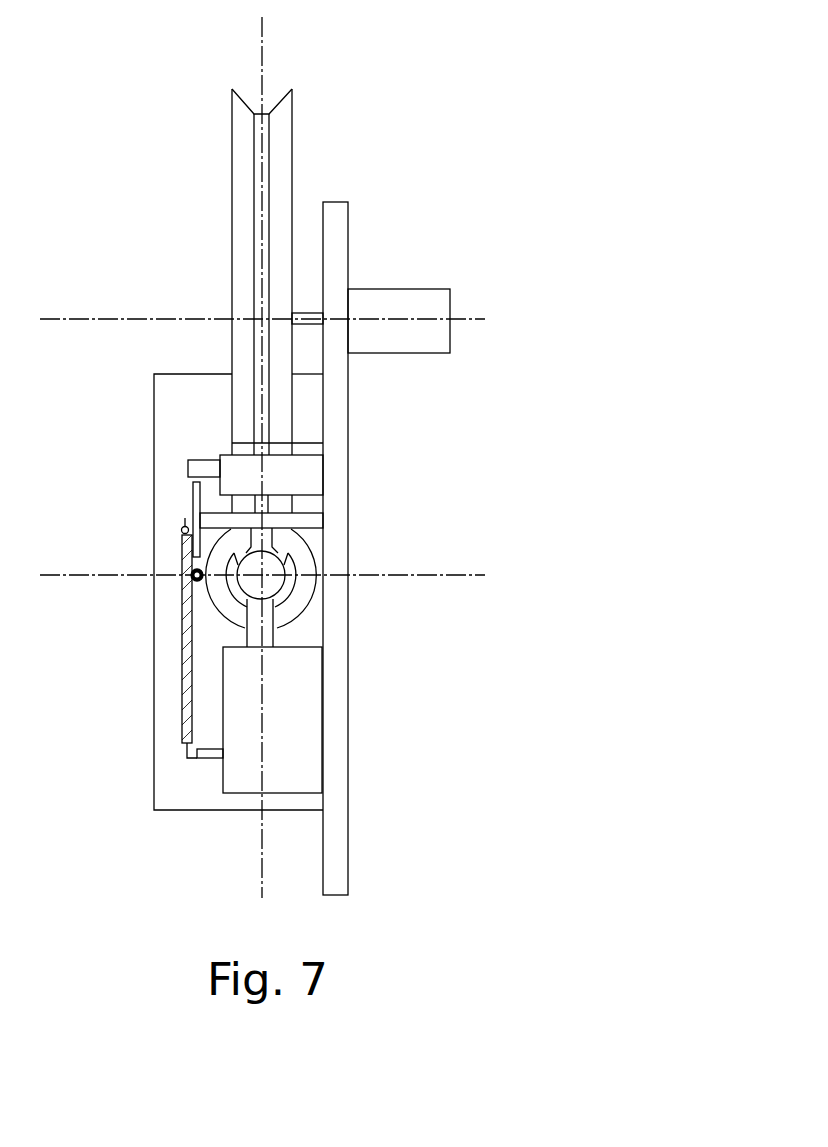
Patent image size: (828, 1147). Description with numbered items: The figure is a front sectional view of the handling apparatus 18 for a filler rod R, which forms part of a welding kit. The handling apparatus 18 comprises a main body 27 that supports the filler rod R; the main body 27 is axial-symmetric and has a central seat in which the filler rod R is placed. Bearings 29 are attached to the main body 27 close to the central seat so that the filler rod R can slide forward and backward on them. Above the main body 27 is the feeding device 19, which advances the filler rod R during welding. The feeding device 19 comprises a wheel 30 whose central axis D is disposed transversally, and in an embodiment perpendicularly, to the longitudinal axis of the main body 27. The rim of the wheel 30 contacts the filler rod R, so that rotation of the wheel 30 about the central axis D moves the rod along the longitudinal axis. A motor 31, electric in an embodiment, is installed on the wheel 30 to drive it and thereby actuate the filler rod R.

The handling apparatus 18 is at (156, 89).
The feeding device 19 is at (305, 143).
The wheel 30 is at (232, 193).
The motor 31 is at (395, 353).
The central axis D is at (483, 316).
The main body 27 is at (154, 723).
The filler rod R is at (287, 580).
The bearings 29 is at (281, 632).